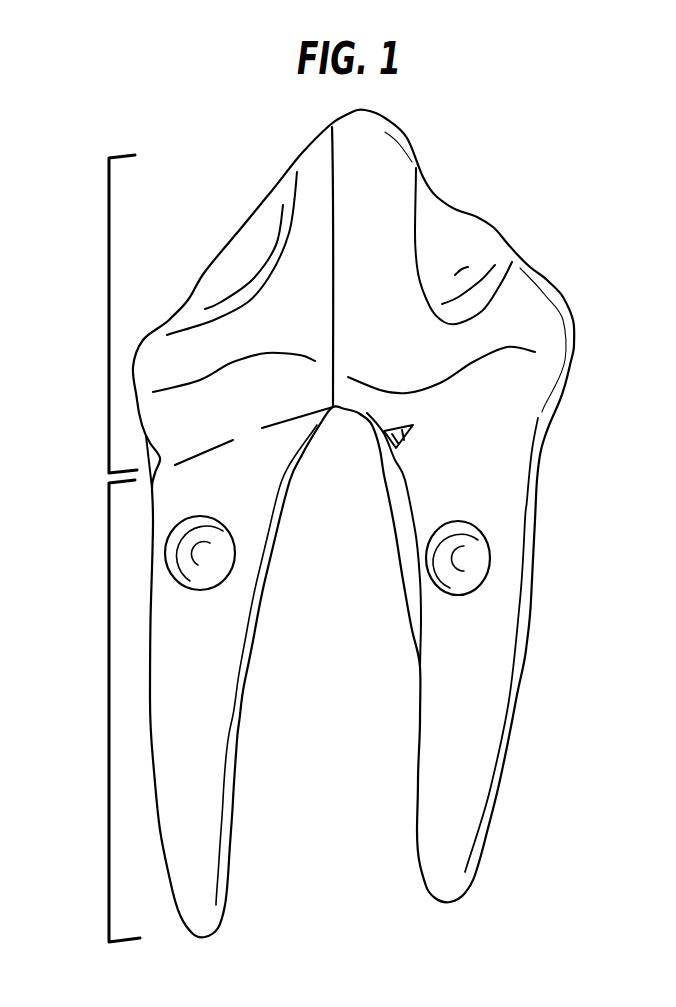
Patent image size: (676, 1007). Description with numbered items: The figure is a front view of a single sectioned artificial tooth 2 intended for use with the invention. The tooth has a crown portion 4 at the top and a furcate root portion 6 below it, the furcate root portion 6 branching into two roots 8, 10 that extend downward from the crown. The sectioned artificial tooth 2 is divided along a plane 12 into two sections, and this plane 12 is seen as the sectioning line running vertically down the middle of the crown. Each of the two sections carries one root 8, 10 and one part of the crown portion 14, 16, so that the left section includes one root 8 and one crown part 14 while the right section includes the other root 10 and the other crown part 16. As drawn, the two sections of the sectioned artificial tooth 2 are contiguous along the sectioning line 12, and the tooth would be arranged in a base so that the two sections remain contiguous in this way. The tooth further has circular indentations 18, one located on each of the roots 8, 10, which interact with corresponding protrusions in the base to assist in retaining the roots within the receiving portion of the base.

The sectioned artificial tooth 2 is at (522, 814).
The crown portion 4 is at (108, 309).
The furcate root portion 6 is at (108, 716).
The root 8 is at (212, 803).
The root 10 is at (498, 693).
The plane (sectioning line) 12 is at (330, 257).
The part of the crown portion 14 is at (228, 268).
The part of the crown portion 16 is at (482, 238).
The circular indentations 18 is at (222, 563).